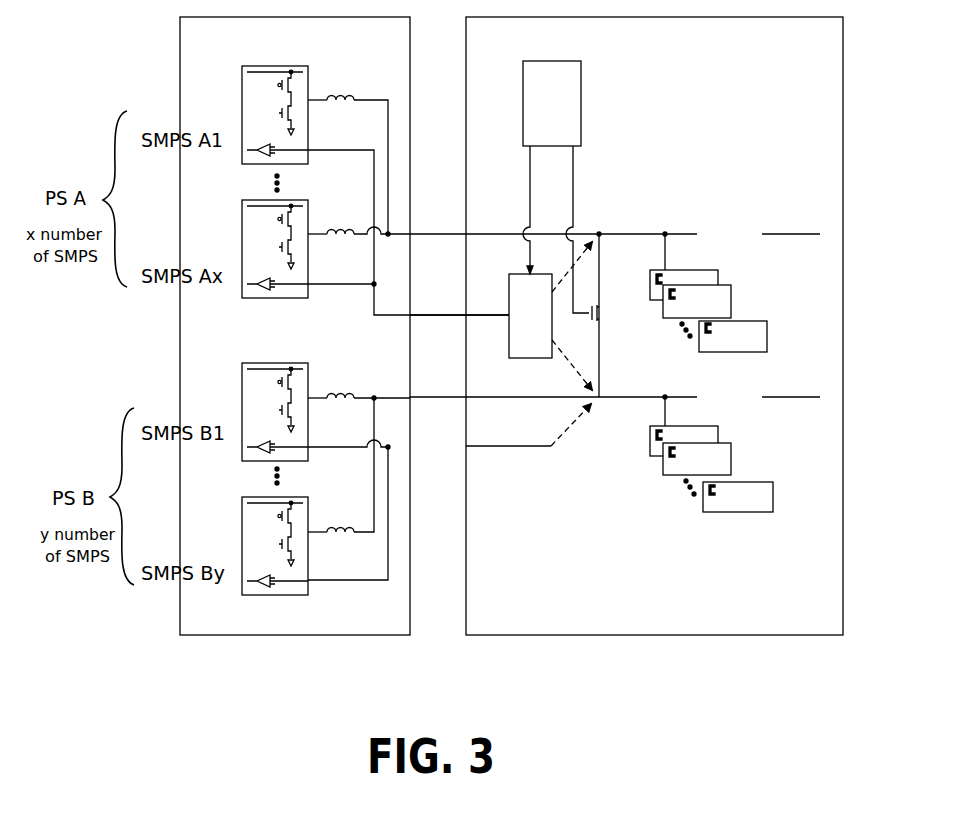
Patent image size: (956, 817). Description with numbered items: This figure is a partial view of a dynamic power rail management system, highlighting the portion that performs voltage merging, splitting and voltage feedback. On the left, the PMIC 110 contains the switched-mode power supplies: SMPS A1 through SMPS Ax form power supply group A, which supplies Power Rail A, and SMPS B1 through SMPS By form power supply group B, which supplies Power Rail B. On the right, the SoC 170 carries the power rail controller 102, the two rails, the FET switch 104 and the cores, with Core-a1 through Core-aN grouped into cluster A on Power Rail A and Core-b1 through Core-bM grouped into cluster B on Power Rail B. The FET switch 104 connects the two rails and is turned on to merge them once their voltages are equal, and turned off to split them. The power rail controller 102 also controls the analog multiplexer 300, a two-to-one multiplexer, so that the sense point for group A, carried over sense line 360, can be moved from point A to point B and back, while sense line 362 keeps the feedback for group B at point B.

The power management integrated circuit (PMIC) 110 is at (281, 51).
The system-on-chip (SoC) 170 is at (639, 326).
The power rail controller 102 is at (569, 113).
The analog multiplexer 300 is at (546, 326).
The sense line 360 is at (501, 340).
The sense line 362 is at (550, 438).
The FET switch 104 is at (633, 320).